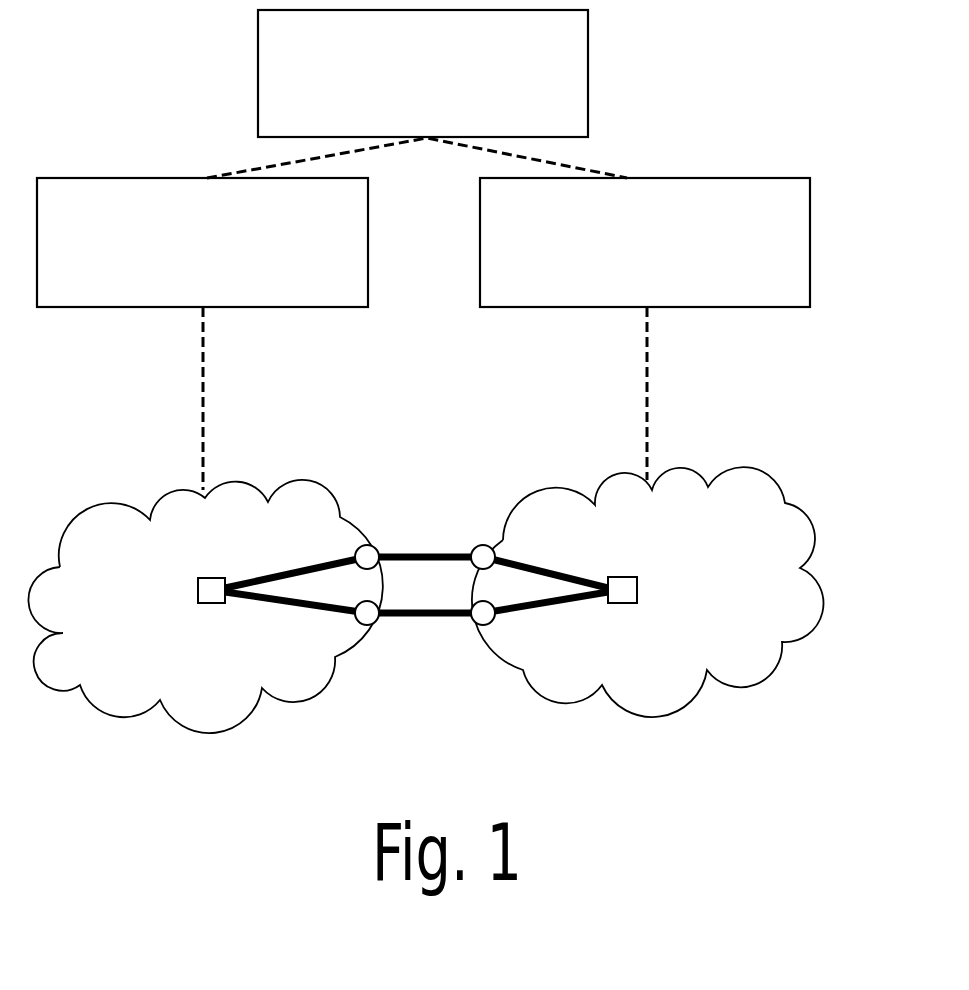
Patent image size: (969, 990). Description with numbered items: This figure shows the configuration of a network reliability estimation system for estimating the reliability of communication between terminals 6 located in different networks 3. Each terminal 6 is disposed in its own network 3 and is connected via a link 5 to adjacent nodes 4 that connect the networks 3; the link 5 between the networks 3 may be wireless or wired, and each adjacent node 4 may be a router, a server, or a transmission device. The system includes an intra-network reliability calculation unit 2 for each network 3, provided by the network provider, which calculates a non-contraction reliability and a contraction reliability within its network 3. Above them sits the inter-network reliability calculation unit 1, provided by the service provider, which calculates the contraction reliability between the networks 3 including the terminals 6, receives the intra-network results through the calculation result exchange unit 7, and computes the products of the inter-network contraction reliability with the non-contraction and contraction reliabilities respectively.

The inter-network reliability calculation unit 1 is at (459, 73).
The intra-network reliability calculation unit 2 is at (456, 242).
The network 3 is at (430, 592).
The adjacent node 4 is at (358, 585).
The link 5 is at (465, 532).
The terminal 6 is at (407, 595).
The calculation result exchange unit 7 is at (439, 160).